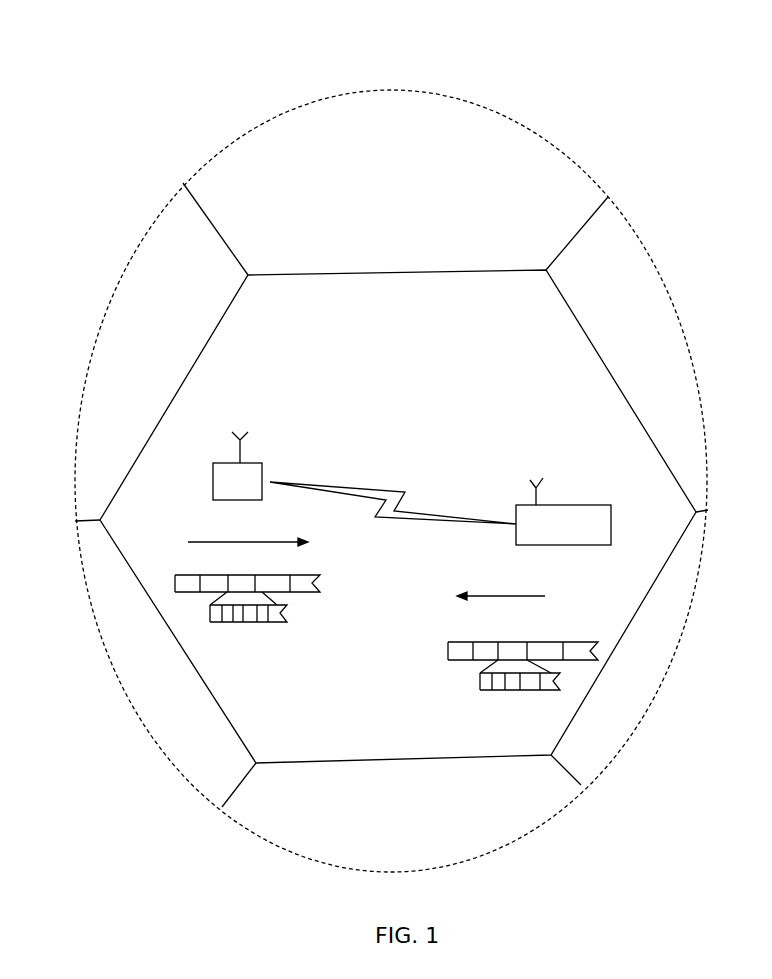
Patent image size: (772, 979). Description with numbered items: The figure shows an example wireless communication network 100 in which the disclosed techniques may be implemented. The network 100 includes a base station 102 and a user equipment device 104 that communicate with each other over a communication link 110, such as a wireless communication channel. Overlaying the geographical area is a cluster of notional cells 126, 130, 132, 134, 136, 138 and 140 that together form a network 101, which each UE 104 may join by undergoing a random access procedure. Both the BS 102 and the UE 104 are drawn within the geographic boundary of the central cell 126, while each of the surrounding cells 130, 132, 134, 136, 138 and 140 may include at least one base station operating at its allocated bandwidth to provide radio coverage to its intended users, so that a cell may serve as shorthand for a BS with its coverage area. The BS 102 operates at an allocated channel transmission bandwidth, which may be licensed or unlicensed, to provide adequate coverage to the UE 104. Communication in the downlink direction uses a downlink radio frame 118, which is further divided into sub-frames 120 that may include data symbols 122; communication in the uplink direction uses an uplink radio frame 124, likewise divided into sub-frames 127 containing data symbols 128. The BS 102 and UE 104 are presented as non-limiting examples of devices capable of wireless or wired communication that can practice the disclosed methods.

The wireless communication network 100 is at (339, 50).
The network 101 is at (512, 110).
The base station 102 is at (213, 472).
The user equipment device 104 is at (585, 505).
The communication link 110 is at (388, 488).
The downlink radio frame 118 is at (176, 583).
The sub-frame 120 is at (210, 612).
The data symbol 122 is at (258, 616).
The uplink radio frame 124 is at (565, 641).
The cell 126 is at (282, 328).
The sub-frame 127 is at (480, 683).
The data symbol 128 is at (523, 688).
The cell 130 is at (145, 240).
The cell 132 is at (260, 142).
The cell 134 is at (628, 262).
The cell 136 is at (605, 737).
The cell 138 is at (297, 820).
The cell 140 is at (153, 713).